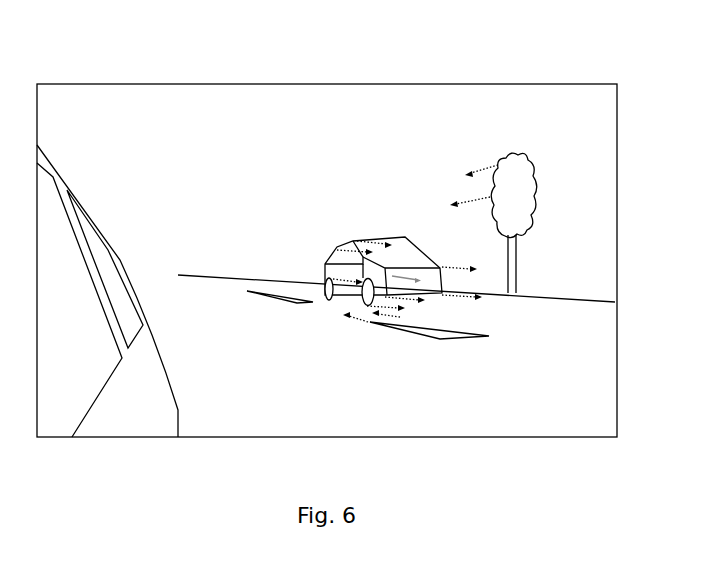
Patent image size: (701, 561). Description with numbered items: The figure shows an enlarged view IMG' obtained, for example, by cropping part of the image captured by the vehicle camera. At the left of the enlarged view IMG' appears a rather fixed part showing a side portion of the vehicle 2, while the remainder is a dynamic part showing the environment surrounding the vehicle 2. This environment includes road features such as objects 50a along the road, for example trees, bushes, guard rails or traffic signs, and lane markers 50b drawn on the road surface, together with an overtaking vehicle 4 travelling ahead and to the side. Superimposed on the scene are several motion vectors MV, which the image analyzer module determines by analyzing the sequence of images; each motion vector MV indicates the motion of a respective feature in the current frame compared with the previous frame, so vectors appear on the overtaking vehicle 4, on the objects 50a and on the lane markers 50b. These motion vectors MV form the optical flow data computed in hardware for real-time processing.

The vehicle 2 is at (77, 183).
The overtaking vehicle 4 is at (348, 242).
The objects along the road 50a is at (530, 153).
The lane markers 50b is at (445, 343).
The motion vectors MV is at (473, 167).
The enlarged view of the image IMG' is at (327, 234).